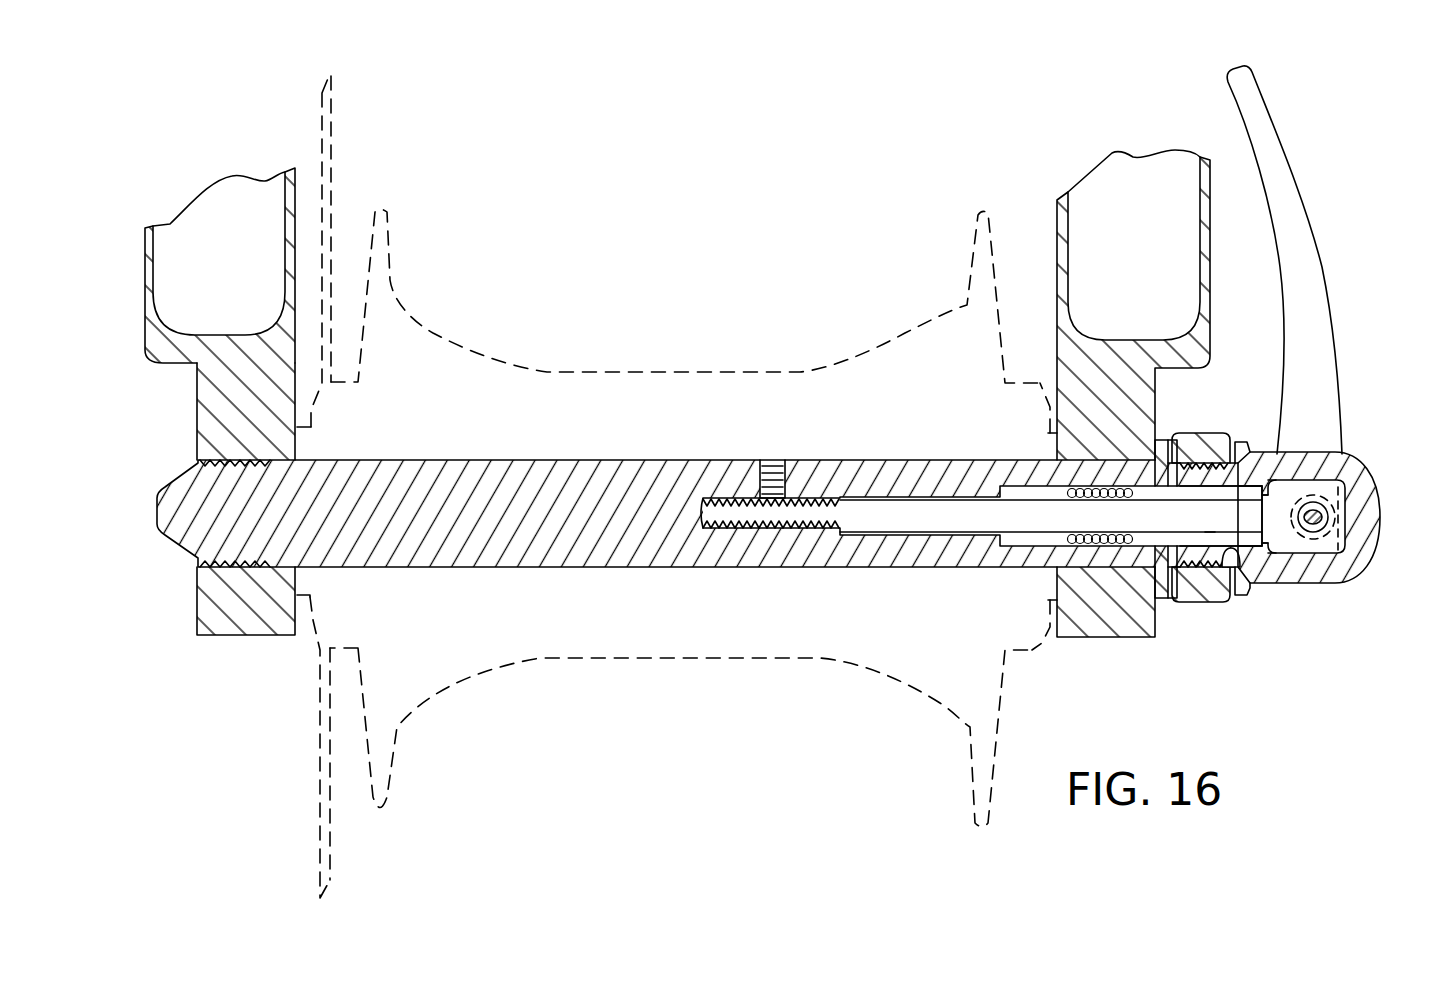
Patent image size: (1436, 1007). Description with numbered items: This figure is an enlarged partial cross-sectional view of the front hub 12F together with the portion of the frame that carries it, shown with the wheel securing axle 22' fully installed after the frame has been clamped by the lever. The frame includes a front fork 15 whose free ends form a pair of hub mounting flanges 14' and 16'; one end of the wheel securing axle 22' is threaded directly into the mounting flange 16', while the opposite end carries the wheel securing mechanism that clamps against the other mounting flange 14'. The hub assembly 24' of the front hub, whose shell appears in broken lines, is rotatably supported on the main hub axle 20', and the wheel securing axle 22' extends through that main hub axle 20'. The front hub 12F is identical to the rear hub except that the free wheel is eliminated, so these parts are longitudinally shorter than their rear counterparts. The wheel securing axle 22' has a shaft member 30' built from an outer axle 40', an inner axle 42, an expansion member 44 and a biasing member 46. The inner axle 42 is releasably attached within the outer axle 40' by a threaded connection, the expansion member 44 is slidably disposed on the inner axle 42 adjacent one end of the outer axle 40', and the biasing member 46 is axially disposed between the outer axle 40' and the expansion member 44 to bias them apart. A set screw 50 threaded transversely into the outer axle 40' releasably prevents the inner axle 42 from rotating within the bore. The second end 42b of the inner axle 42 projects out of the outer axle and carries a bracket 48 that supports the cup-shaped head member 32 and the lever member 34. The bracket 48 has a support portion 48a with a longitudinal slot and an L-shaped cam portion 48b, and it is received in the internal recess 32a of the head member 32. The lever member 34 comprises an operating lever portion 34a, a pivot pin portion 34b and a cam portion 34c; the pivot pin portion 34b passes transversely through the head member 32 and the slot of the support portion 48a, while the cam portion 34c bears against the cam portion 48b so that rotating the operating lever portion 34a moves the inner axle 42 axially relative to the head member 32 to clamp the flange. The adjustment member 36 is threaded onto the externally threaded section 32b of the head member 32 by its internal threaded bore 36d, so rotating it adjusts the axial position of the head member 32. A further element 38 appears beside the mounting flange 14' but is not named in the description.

The front hub 12F is at (1316, 98).
The hub mounting flange 14' is at (1131, 421).
The front fork 15 is at (143, 262).
The hub mounting flange 16' is at (246, 526).
The main hub axle 20' is at (667, 487).
The wheel securing axle 22' is at (1393, 308).
The hub assembly 24' is at (685, 518).
The shaft member 30' is at (874, 277).
The head member 32 is at (1270, 594).
The internal recess 32a is at (1213, 498).
The threaded section 32b is at (1218, 463).
The lever member 34 is at (1290, 317).
The operating lever portion 34a is at (1285, 210).
The pivot pin portion 34b is at (1323, 517).
The cam portion 34c is at (1308, 478).
The adjustment member 36 is at (1192, 426).
The threaded bore 36d is at (1240, 600).
The washer 38 is at (1165, 600).
The outer axle 40' is at (662, 441).
The inner axle 42 is at (858, 496).
The second end 42b is at (1212, 520).
The expansion member 44 is at (1117, 443).
The biasing member 46 is at (1068, 490).
The bracket 48 is at (1325, 585).
The support portion 48a is at (1300, 560).
The cam portion 48b is at (1338, 540).
The set screw 50 is at (770, 459).